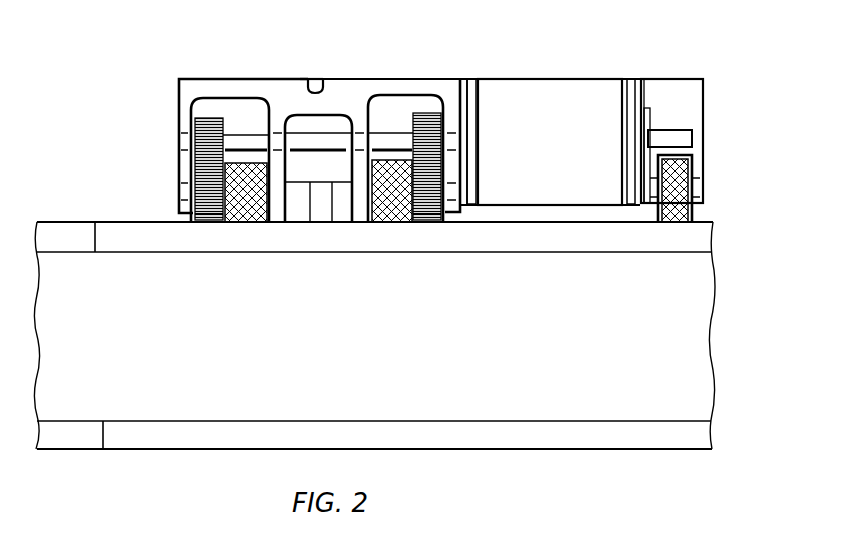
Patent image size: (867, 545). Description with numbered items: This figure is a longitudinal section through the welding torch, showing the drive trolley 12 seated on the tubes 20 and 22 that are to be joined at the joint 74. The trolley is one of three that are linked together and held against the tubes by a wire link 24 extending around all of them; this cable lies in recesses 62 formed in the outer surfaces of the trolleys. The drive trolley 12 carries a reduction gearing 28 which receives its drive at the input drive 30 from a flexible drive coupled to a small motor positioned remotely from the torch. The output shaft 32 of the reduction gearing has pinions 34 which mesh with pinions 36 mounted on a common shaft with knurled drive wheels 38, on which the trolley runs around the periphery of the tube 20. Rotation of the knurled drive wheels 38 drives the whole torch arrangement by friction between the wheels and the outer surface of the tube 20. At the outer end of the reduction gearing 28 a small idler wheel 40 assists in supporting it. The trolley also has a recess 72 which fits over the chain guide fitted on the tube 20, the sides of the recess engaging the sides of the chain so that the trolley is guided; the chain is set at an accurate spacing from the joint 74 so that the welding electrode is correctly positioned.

The drive trolley 12 is at (370, 90).
The tube 20 is at (442, 442).
The tube 22 is at (77, 433).
The wire link 24 is at (323, 77).
The reduction gearing 28 is at (513, 138).
The input drive 30 is at (675, 137).
The output shaft 32 is at (238, 142).
The pinions 34 is at (195, 122).
The pinions 36 is at (198, 222).
The knurled drive wheels 38 is at (253, 215).
The idler wheel 40 is at (673, 220).
The recesses 62 is at (306, 80).
The recess 72 is at (280, 123).
The joint 74 is at (95, 222).